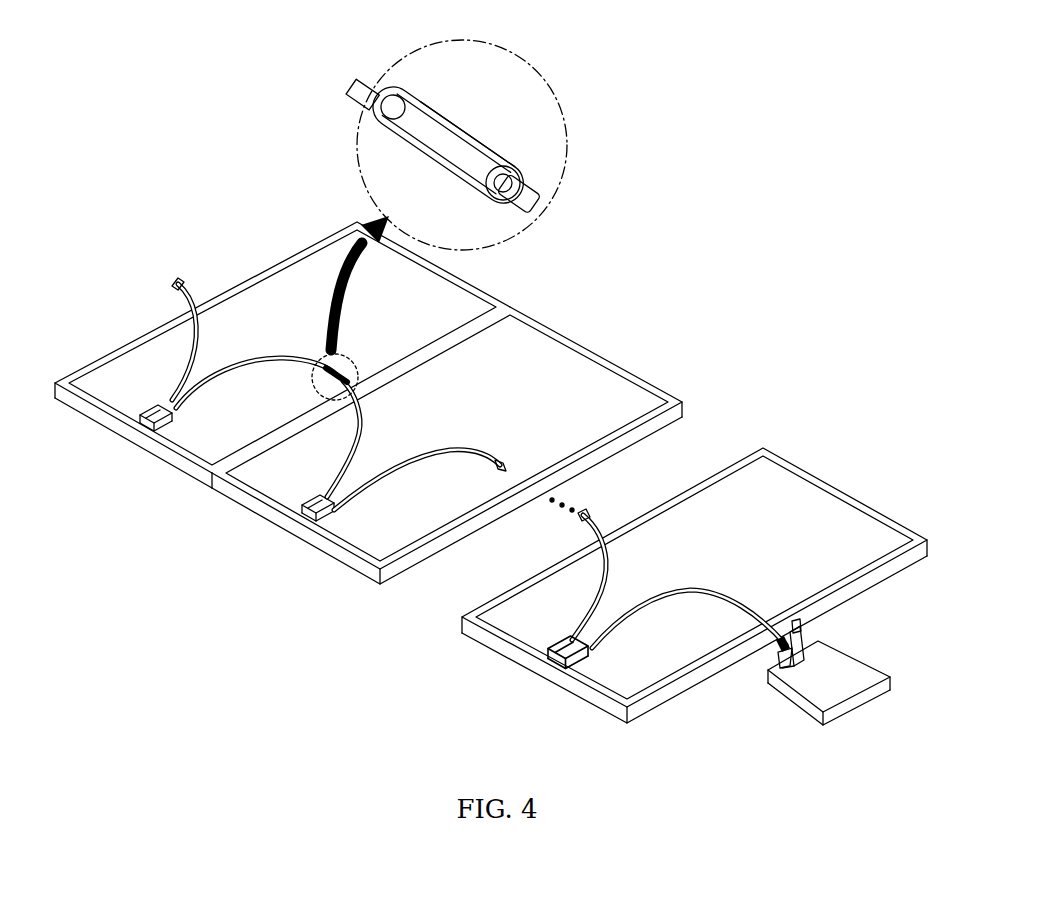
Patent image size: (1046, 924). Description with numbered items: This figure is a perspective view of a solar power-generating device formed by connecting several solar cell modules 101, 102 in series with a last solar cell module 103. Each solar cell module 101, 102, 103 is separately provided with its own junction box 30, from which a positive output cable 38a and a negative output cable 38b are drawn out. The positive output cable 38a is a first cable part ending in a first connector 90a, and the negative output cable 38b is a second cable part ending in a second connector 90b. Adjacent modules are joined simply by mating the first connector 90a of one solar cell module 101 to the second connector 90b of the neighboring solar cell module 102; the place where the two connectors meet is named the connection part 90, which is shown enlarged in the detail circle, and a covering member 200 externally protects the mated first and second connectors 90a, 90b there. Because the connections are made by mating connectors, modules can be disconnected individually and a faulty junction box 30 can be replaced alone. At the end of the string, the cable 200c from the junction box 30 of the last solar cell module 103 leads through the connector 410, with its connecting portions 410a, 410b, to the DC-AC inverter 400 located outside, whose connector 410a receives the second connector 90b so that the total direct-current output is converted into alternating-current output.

The solar cell module 101 is at (122, 454).
The solar cell module 102 is at (300, 546).
The last solar cell module 103 is at (545, 692).
The junction box 30 is at (158, 430).
The (+) output cable 38a is at (262, 360).
The (−) output cable 38b is at (190, 357).
The connection part 90 is at (452, 107).
The first connector 90a is at (415, 130).
The second connector 90b is at (505, 148).
The covering member 200 is at (487, 162).
The third cable 200c is at (782, 650).
The DC-AC inverter 400 is at (823, 685).
The module connector 410 is at (794, 637).
The connector of the DC-AC inverter 410a is at (797, 652).
The second connecting portion 410b is at (802, 626).